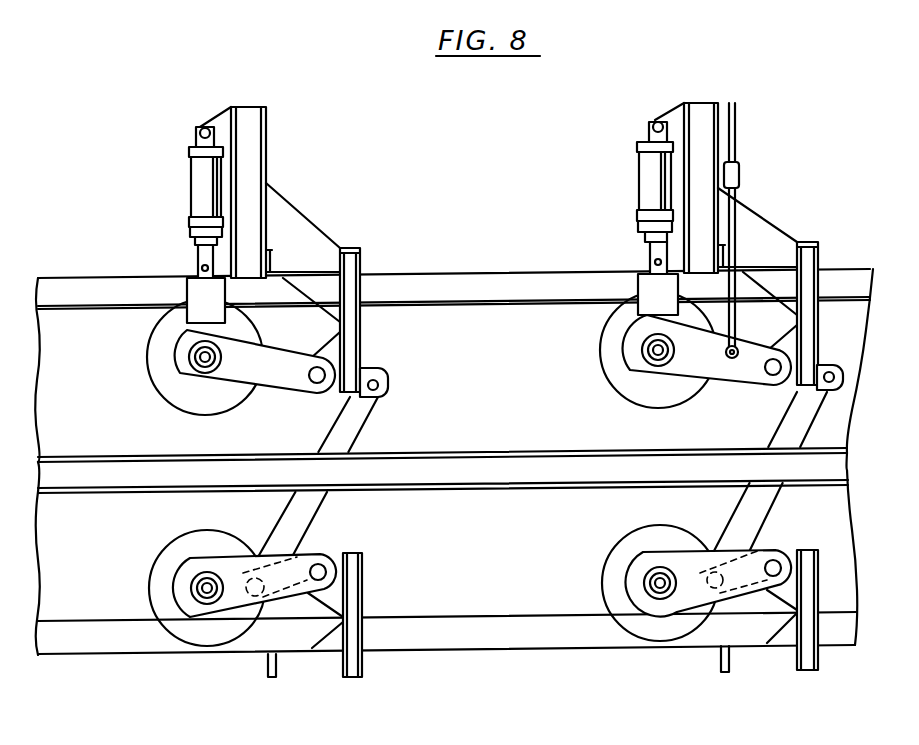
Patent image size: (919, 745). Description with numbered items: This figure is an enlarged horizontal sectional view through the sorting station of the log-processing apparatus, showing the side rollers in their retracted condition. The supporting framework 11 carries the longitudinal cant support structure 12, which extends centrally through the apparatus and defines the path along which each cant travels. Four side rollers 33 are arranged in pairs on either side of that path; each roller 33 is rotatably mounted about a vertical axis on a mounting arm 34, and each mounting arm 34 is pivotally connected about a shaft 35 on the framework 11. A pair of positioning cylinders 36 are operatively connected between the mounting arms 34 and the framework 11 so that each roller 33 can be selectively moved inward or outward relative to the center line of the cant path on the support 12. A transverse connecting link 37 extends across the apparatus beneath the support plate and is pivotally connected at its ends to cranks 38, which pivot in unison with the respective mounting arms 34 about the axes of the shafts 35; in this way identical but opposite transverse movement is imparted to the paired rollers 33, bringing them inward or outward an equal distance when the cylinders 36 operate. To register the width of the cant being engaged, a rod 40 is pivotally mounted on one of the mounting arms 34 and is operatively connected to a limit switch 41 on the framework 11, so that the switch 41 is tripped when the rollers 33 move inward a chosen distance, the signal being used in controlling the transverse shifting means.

The supporting framework 11 is at (510, 273).
The longitudinal cant support structure 12 is at (482, 449).
The side roller 33 is at (185, 393).
The mounting arm 34 is at (278, 370).
The shaft 35 is at (193, 357).
The positioning cylinder 36 is at (200, 176).
The transverse connecting link 37 is at (352, 436).
The crank 38 is at (367, 370).
The rod 40 is at (735, 228).
The limit switch 41 is at (738, 176).